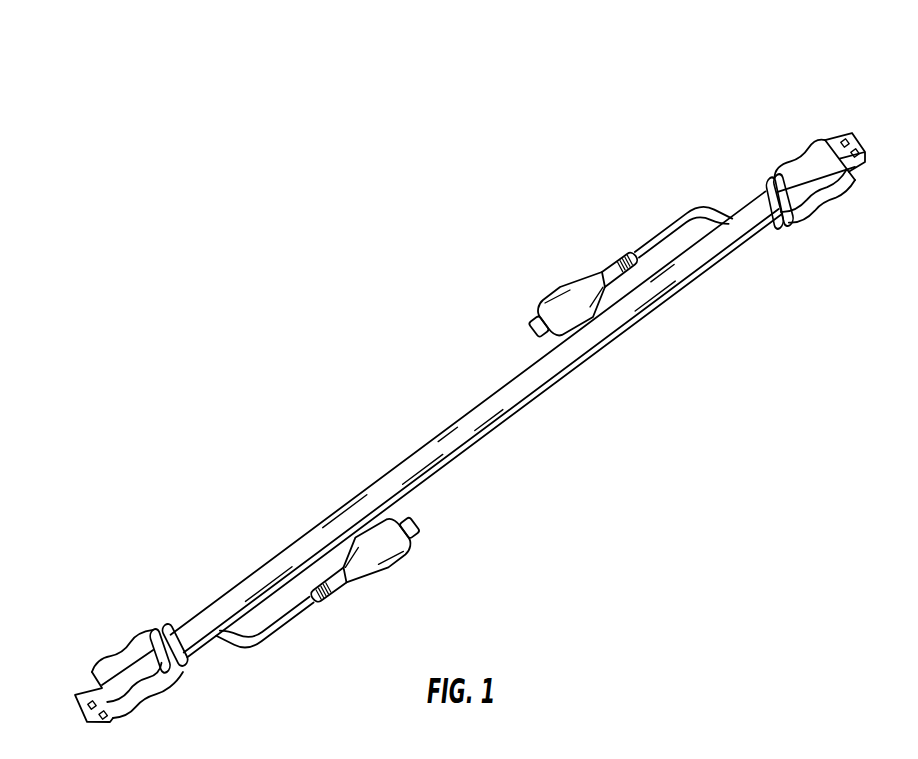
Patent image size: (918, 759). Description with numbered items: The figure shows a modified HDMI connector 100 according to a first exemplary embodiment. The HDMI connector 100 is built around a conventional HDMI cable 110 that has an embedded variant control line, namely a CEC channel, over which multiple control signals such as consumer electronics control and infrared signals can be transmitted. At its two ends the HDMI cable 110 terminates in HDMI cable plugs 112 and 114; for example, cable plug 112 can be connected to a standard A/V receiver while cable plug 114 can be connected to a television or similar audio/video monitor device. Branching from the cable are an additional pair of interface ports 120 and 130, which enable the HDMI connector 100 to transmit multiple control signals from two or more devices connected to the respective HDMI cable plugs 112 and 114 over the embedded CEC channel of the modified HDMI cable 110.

The modified HDMI connector 100 is at (570, 160).
The HDMI cable 110 is at (272, 567).
The HDMI cable plug 112 is at (107, 670).
The HDMI cable plug 114 is at (857, 157).
The interface port 120 is at (382, 563).
The interface port 130 is at (580, 277).